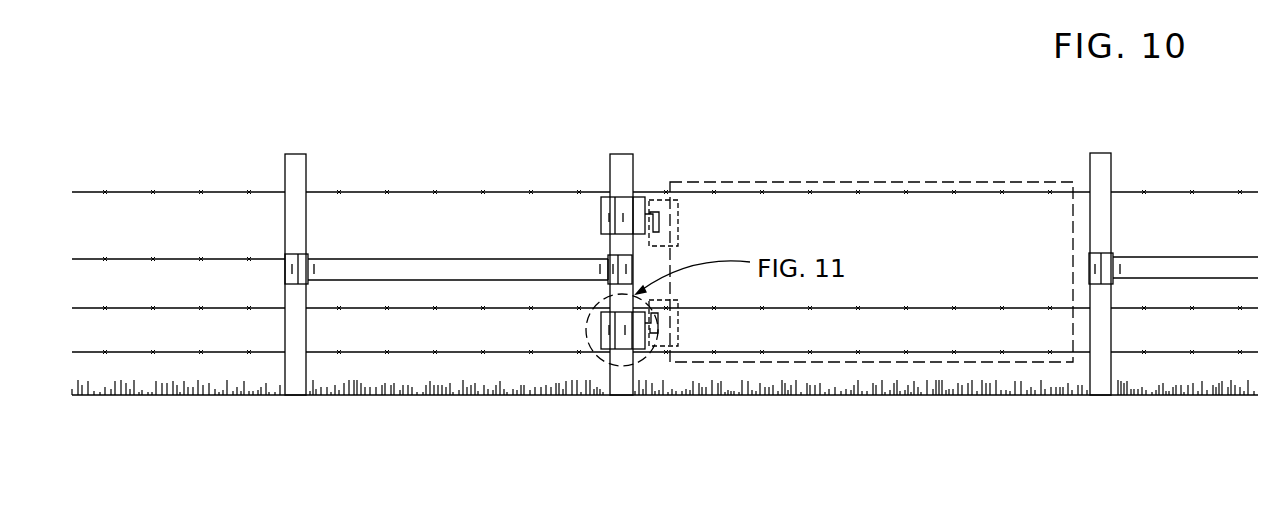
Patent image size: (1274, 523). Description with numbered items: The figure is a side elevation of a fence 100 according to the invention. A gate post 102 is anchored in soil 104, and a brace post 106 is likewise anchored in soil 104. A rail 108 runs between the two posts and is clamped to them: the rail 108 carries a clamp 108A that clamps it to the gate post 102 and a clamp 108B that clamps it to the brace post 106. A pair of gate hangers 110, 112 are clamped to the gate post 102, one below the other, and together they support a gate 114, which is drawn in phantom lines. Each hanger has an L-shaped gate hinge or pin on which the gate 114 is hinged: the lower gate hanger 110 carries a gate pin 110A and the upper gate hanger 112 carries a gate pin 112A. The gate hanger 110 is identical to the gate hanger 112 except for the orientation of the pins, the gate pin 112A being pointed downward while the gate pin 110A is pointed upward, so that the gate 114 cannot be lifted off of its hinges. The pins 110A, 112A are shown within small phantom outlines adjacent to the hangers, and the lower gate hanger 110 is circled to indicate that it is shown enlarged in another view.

The fence 100 is at (247, 88).
The gate post 102 is at (622, 155).
The soil 104 is at (767, 397).
The brace post 106 is at (285, 163).
The rail 108 is at (387, 258).
The clamp 108A is at (610, 257).
The clamp 108B is at (285, 257).
The gate hanger 110 is at (601, 328).
The gate pin 110A is at (657, 315).
The gate hanger 112 is at (640, 197).
The gate pin 112A is at (657, 225).
The gate 114 is at (895, 182).